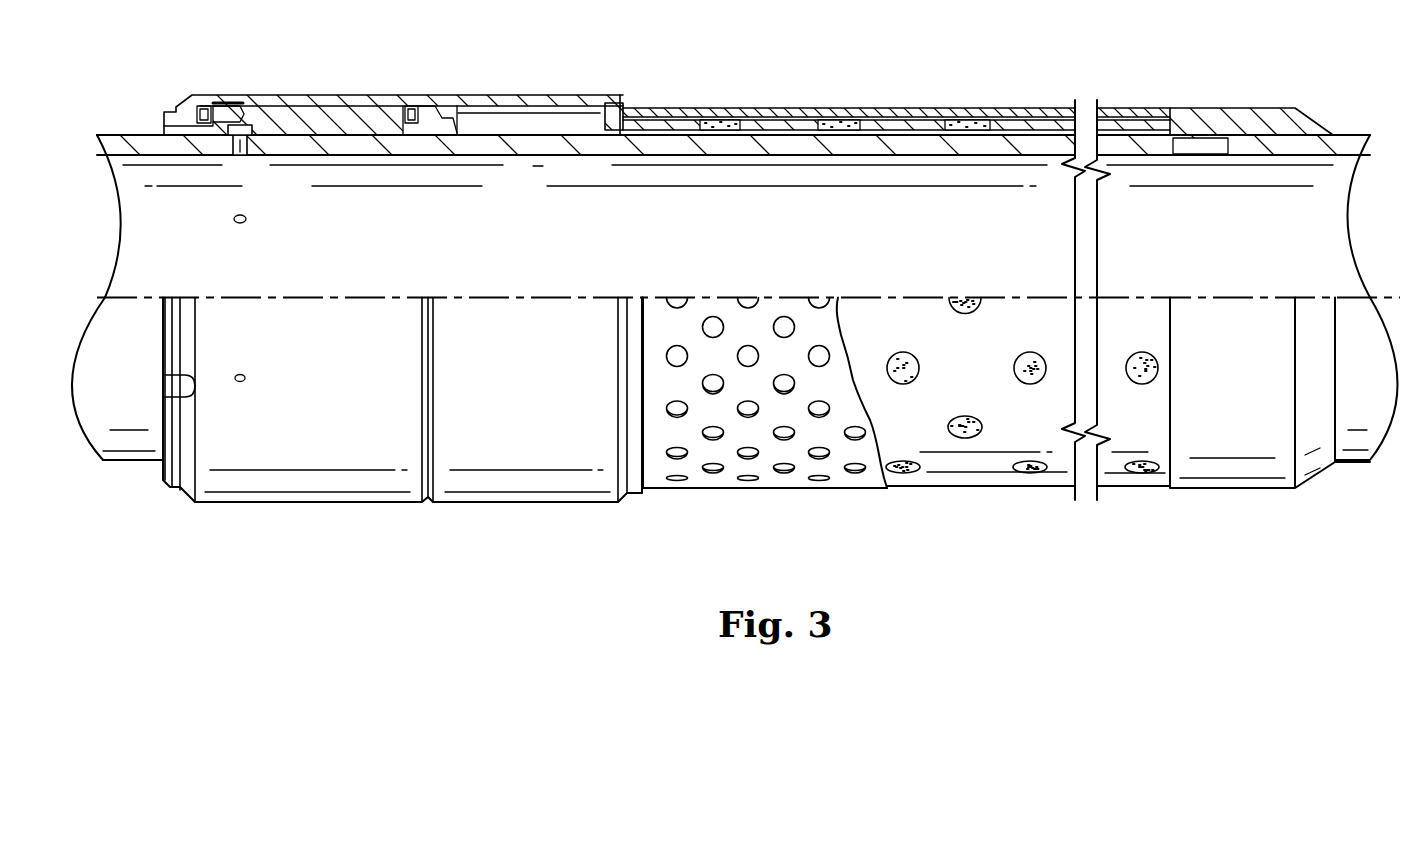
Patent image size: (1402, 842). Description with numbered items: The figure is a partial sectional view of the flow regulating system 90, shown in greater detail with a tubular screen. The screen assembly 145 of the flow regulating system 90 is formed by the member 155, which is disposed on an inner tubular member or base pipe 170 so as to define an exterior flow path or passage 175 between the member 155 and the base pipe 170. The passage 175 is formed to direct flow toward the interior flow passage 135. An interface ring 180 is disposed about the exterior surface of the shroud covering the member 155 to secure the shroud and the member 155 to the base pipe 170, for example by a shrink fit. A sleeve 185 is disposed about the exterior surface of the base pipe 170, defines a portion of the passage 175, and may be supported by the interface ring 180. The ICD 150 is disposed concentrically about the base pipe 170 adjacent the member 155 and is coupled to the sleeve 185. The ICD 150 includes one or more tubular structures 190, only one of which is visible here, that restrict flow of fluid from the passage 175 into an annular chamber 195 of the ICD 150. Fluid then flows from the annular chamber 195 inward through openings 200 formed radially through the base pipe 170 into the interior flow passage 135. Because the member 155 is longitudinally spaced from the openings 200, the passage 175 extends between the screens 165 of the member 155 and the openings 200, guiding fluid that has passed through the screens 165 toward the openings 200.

The flow regulating system 90 is at (303, 581).
The interior flow passage 135 is at (451, 249).
The screen assembly 145 is at (769, 511).
The ICD 150 is at (255, 504).
The member 155 is at (1028, 420).
The screens 165 is at (965, 410).
The base pipe 170 is at (1033, 143).
The passage 175 is at (912, 132).
The interface ring 180 is at (637, 102).
The sleeve 185 is at (507, 98).
The tubular structures 190 is at (395, 108).
The annular chamber 195 is at (282, 107).
The openings 200 is at (237, 157).